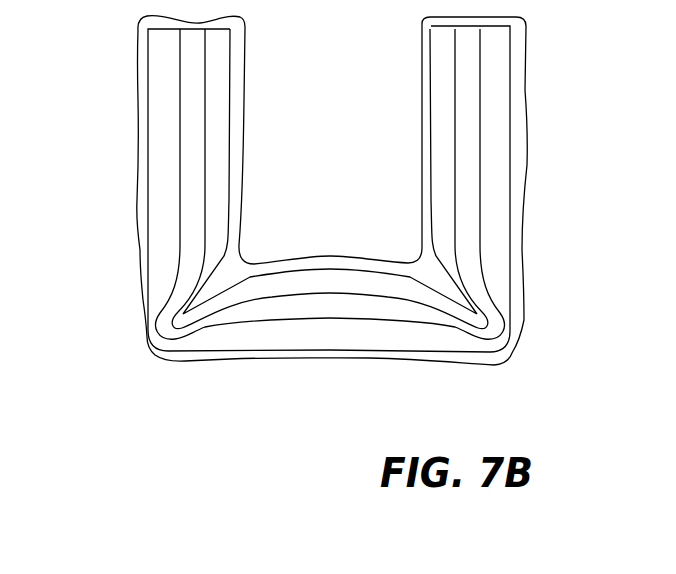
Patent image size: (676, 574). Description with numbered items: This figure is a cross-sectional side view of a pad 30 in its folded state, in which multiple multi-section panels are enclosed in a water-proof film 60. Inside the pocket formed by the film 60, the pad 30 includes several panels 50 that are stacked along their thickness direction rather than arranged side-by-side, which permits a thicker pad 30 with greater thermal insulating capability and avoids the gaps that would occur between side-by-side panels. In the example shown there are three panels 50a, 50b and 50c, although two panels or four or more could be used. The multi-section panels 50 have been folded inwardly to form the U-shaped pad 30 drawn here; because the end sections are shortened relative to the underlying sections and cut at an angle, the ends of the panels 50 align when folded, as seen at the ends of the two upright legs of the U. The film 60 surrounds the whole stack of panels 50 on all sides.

The pad 30 is at (384, 264).
The film 60 is at (527, 91).
The panels 50 is at (301, 269).
The first panel 50a is at (306, 325).
The second panel 50b is at (332, 307).
The third panel 50c is at (364, 278).